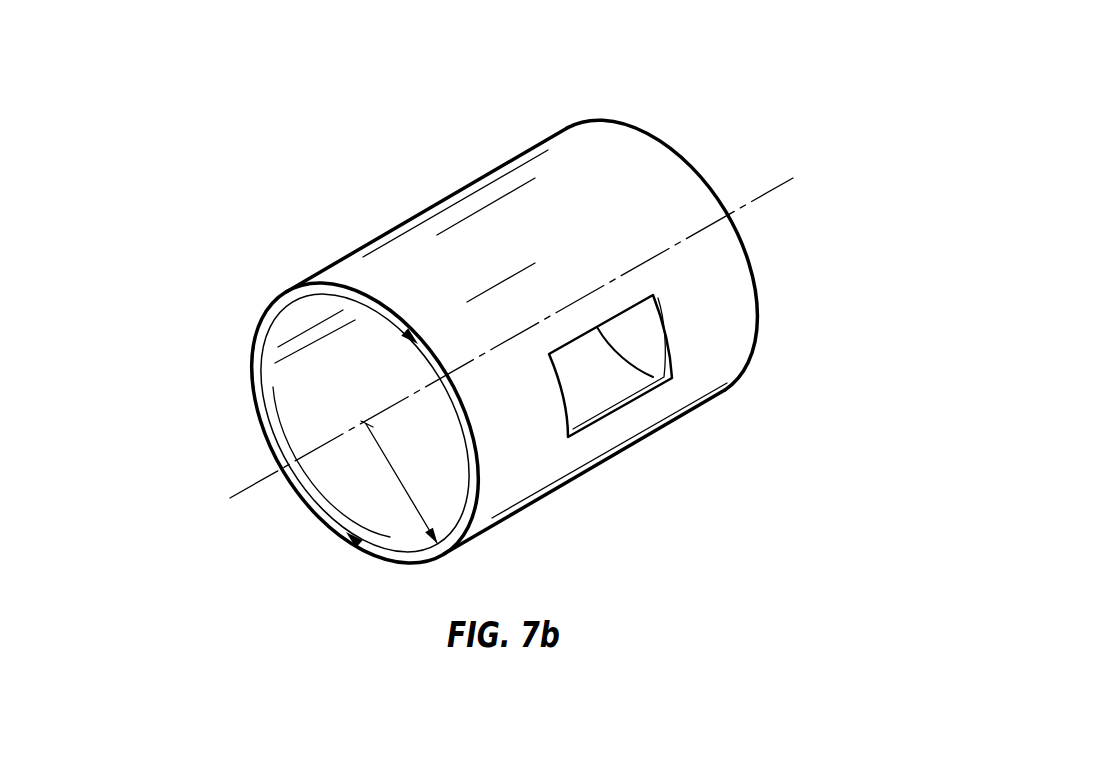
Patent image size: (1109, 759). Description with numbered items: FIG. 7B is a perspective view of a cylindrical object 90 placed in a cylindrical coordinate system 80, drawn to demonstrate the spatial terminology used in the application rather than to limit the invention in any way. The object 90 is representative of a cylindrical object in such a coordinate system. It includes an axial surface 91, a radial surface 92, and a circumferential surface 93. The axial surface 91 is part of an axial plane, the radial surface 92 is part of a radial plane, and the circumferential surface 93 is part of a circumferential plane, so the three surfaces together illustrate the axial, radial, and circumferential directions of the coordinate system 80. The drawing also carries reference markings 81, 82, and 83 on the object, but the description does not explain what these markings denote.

The cylindrical coordinate system 80 is at (685, 133).
The longitudinal axis 81 is at (243, 493).
The inner radius 82 is at (407, 488).
The end ring 83 is at (263, 313).
The object 90 is at (543, 127).
The axial surface 91 is at (638, 380).
The radial surface 92 is at (387, 552).
The circumferential surface 93 is at (483, 230).